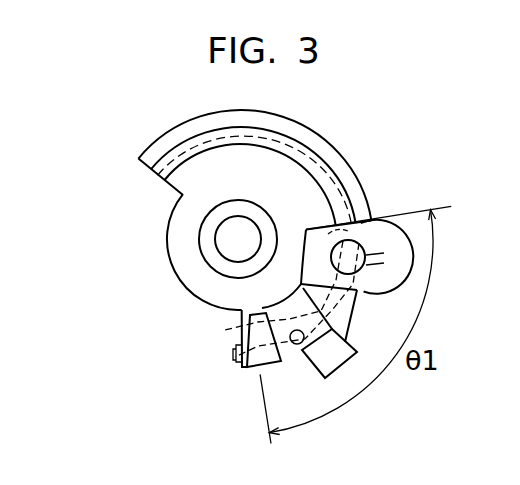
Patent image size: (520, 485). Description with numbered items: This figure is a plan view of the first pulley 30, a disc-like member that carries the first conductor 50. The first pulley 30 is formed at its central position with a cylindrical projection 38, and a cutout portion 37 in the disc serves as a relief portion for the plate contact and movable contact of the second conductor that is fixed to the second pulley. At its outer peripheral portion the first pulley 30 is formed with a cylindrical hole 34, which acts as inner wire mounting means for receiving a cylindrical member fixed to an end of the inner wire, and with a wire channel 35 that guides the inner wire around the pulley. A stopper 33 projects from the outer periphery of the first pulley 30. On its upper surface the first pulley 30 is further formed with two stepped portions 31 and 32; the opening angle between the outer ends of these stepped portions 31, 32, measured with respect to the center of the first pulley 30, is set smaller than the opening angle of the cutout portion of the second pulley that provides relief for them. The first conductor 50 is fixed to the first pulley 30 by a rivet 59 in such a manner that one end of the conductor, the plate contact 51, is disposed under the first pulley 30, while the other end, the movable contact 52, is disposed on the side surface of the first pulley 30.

The first pulley 30 is at (165, 104).
The stepped portion 31 is at (242, 330).
The stepped portion 32 is at (366, 222).
The stopper 33 is at (342, 372).
The cylindrical hole 34 is at (384, 263).
The wire channel 35 is at (150, 141).
The cutout portion 37 is at (157, 198).
The cylindrical projection 38 is at (208, 250).
The first conductor 50 is at (347, 316).
The plate contact 51 is at (378, 238).
The movable contact 52 is at (236, 358).
The rivet 59 is at (298, 344).